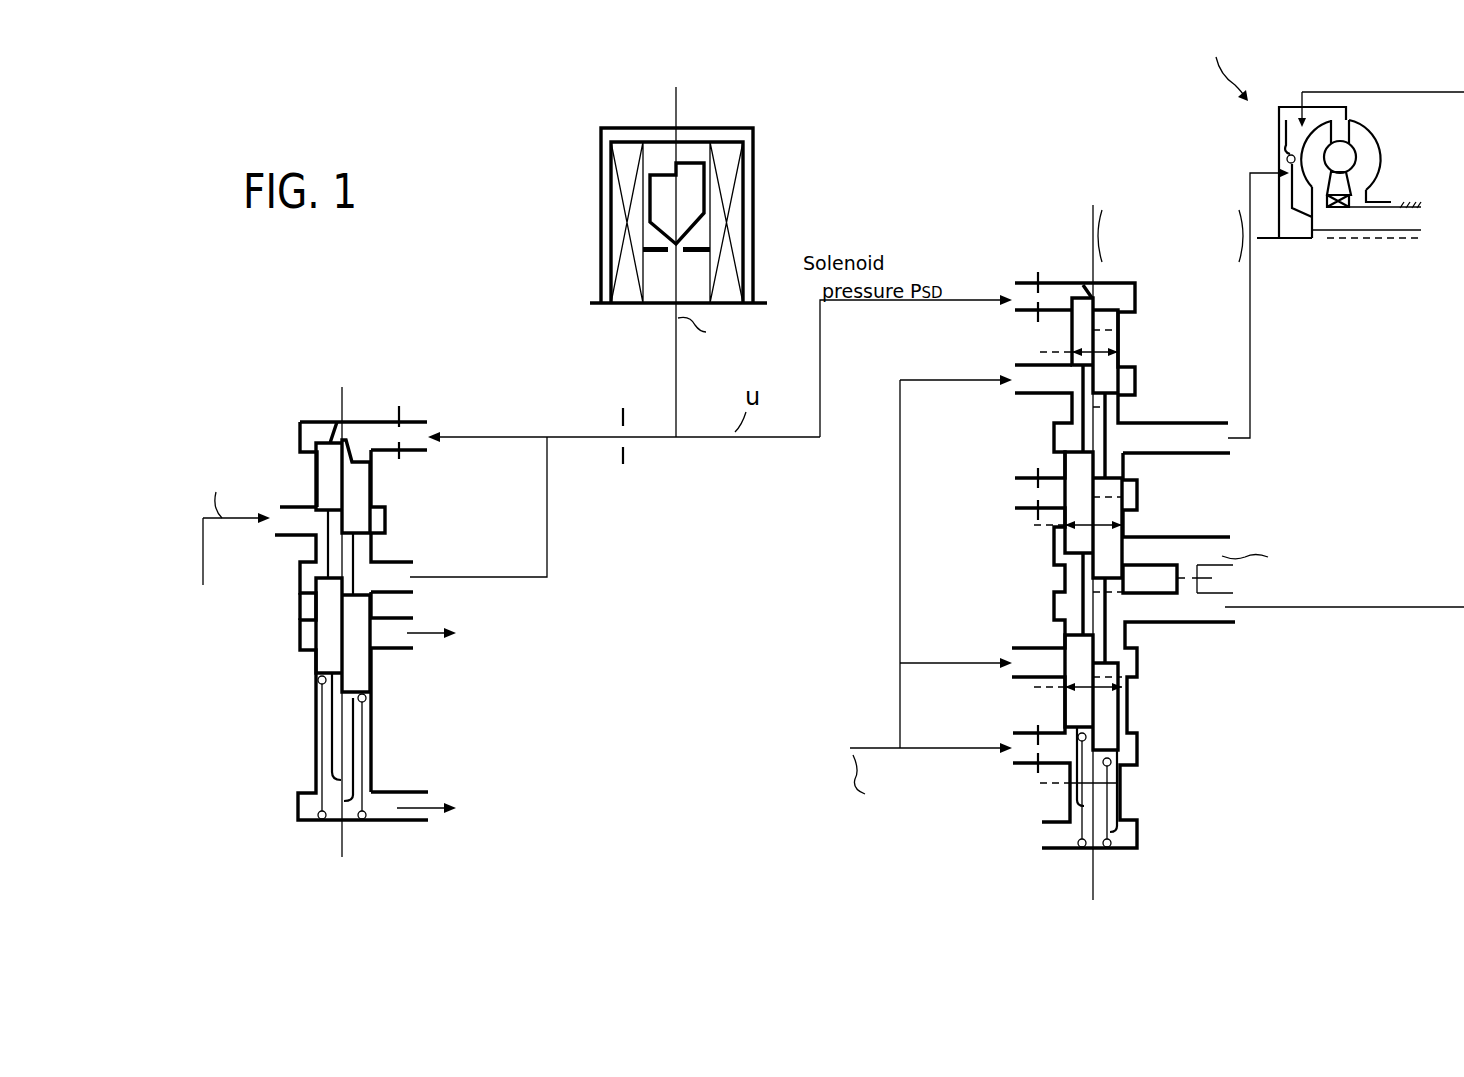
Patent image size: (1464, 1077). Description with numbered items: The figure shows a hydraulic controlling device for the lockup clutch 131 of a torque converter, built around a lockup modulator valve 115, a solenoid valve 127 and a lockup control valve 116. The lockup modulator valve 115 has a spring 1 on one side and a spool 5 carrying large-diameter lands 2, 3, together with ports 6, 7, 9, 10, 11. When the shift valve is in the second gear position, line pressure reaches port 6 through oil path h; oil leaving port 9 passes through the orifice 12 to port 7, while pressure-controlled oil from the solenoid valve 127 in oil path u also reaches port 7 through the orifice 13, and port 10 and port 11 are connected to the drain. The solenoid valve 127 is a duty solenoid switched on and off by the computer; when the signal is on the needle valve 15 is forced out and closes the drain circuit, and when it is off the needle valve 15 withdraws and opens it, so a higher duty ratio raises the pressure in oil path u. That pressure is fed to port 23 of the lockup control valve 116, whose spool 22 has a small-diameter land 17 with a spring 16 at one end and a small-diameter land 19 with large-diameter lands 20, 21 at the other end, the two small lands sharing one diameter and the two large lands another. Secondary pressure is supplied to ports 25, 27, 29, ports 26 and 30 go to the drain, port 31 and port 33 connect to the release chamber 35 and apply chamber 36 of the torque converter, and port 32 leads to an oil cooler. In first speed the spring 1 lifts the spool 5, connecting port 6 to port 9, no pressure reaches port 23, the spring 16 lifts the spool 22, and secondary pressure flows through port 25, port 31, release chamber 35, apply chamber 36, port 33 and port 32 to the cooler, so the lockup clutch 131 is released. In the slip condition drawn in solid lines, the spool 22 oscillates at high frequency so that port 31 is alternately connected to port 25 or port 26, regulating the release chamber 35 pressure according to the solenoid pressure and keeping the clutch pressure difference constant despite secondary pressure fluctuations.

The spring 1 is at (318, 715).
The land 2 is at (363, 489).
The land 3 is at (363, 668).
The spool 5 is at (326, 600).
The port 6 is at (283, 522).
The port 7 is at (421, 437).
The port 9 is at (409, 578).
The port 10 is at (408, 637).
The port 11 is at (427, 801).
The orifice 12 is at (400, 409).
The orifice 13 is at (630, 463).
The needle valve 15 is at (662, 195).
The spring 16 is at (1078, 824).
The small-diameter land 17 is at (1118, 803).
The small-diameter land 19 is at (1119, 365).
The large-diameter land 20 is at (1118, 553).
The large-diameter land 21 is at (1120, 701).
The spool 22 is at (1078, 577).
The port 23 is at (1021, 293).
The port 25 is at (1018, 387).
The port 26 is at (1016, 486).
The port 27 is at (1018, 661).
The port 29 is at (1023, 753).
The port 30 is at (1048, 840).
The port 31 is at (1230, 441).
The port 32 is at (1232, 542).
The port 33 is at (1230, 613).
The release chamber 35 is at (1294, 223).
The apply chamber 36 is at (1325, 167).
The lockup modulator valve 115 is at (485, 652).
The lockup control valve 116 is at (1078, 537).
The solenoid valve 127 is at (725, 245).
The lockup clutch 131 is at (1286, 123).